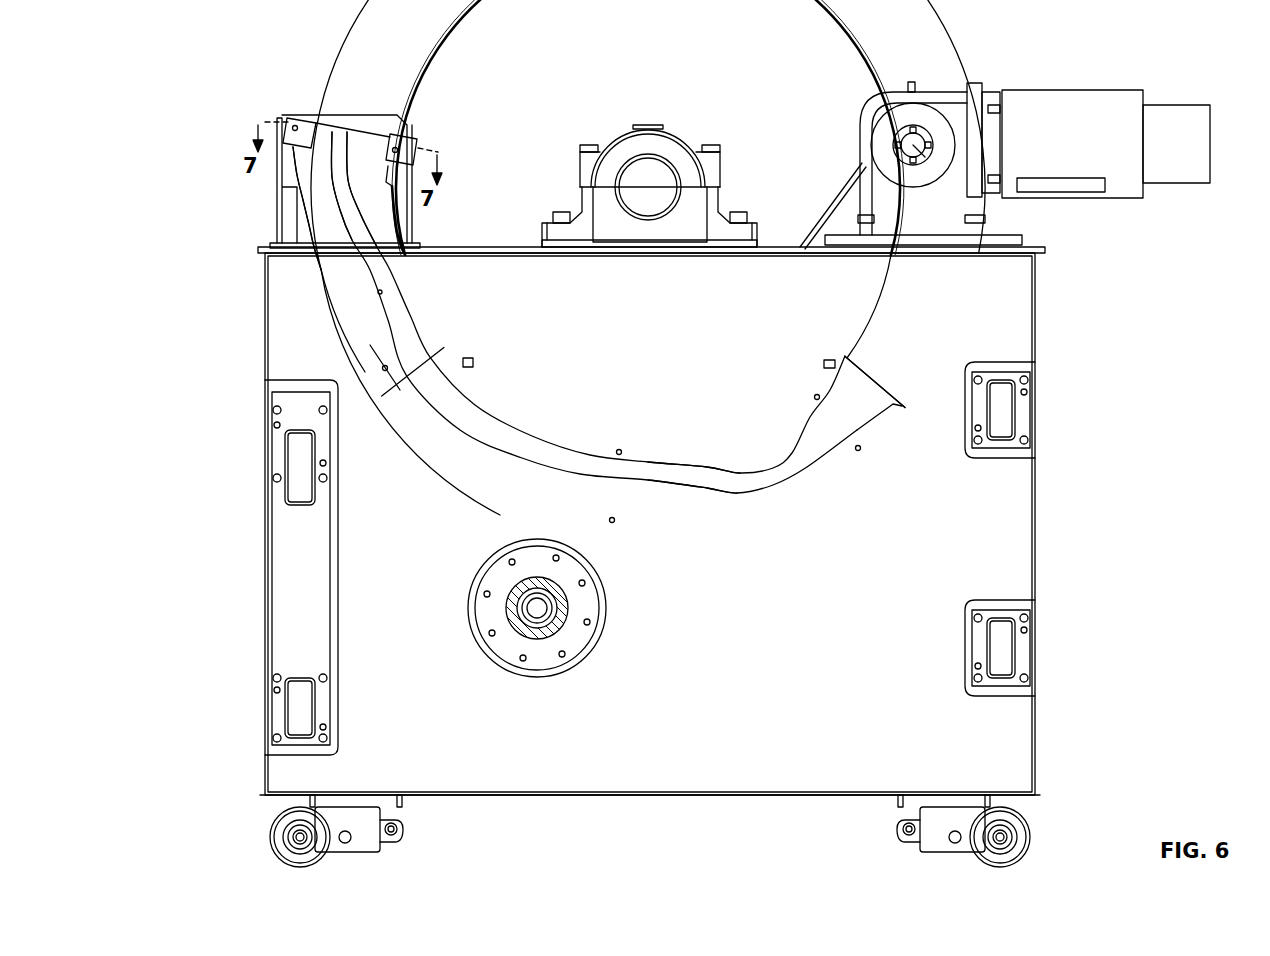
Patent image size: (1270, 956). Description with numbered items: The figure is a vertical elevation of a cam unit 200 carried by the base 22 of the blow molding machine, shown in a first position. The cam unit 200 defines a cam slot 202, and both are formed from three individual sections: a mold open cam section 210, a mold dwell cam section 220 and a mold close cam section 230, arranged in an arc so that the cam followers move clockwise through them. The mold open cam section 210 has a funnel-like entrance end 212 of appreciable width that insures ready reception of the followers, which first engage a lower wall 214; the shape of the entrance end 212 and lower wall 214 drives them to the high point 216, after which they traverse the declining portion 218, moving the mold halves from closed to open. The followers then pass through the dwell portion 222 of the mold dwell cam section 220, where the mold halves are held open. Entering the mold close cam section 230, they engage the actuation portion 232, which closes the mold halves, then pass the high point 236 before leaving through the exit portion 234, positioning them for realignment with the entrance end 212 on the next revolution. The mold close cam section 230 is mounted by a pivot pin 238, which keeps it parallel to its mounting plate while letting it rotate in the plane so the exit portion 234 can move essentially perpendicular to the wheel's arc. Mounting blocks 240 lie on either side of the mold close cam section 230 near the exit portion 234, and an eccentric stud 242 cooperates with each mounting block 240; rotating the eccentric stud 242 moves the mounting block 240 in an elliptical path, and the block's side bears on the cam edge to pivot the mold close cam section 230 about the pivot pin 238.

The base 22 is at (1015, 545).
The cam unit 200 is at (637, 586).
The cam slot 202 is at (603, 442).
The mold open cam section 210 is at (879, 452).
The entrance end 212 is at (865, 383).
The lower wall 214 is at (880, 420).
The high point 216 is at (772, 476).
The declining portion 218 is at (702, 481).
The mold dwell cam section 220 is at (443, 463).
The dwell portion 222 is at (480, 413).
The mold close cam section 230 is at (304, 278).
The actuation portion 232 is at (345, 218).
The exit portion 234 is at (337, 140).
The high point 236 is at (333, 182).
The pivot pin 238 is at (384, 367).
The mounting block 240 is at (307, 116).
The eccentric stud 242 is at (293, 126).